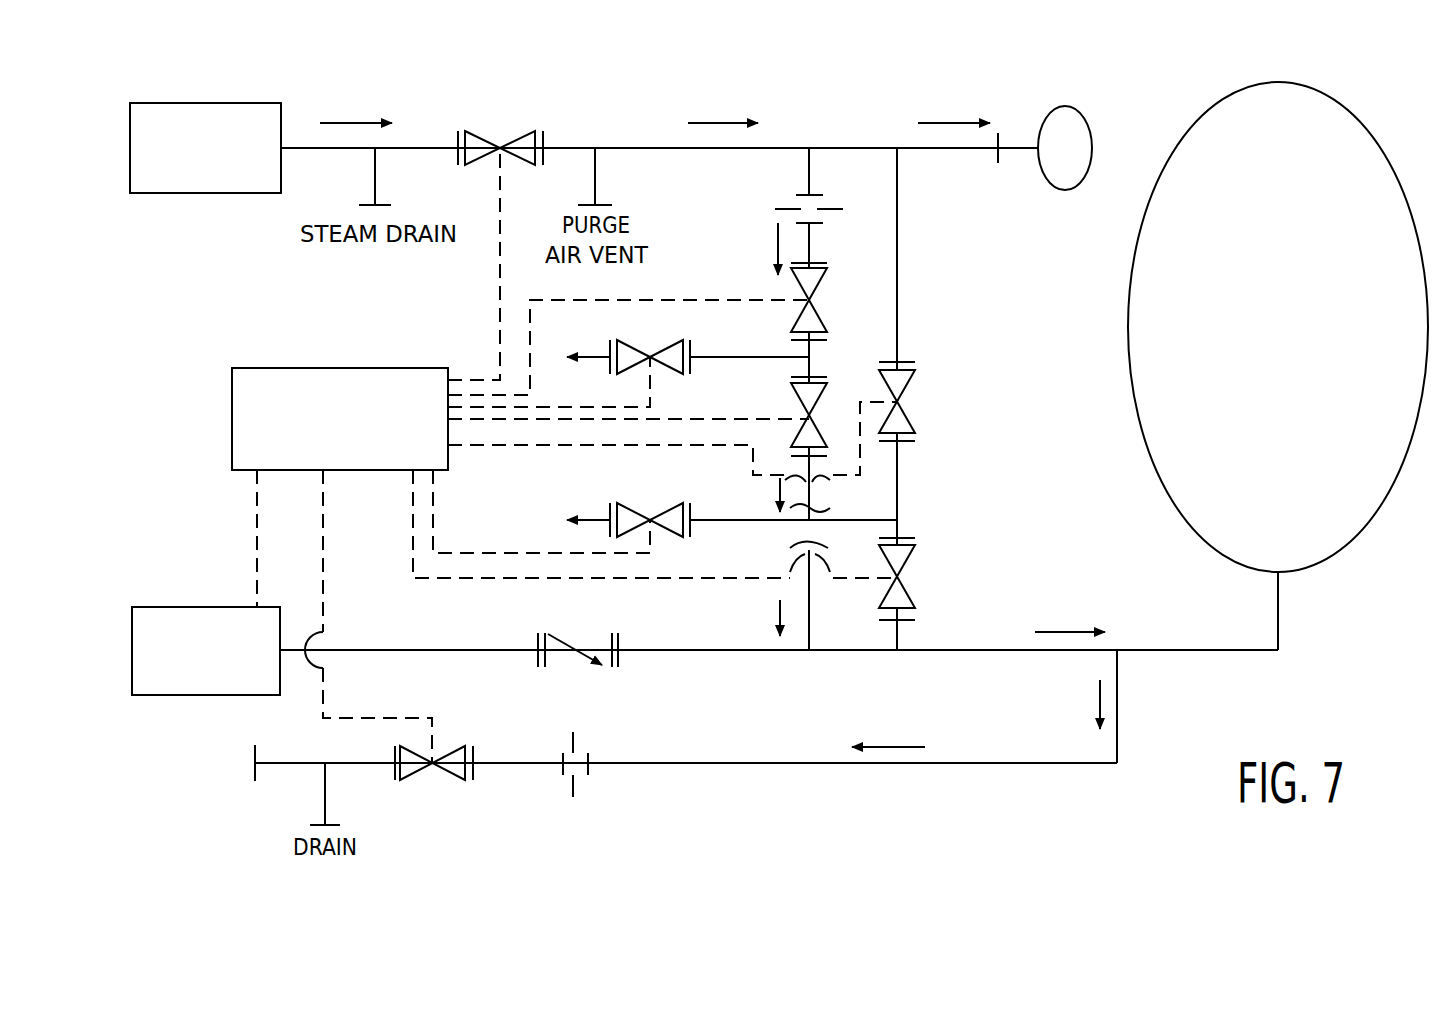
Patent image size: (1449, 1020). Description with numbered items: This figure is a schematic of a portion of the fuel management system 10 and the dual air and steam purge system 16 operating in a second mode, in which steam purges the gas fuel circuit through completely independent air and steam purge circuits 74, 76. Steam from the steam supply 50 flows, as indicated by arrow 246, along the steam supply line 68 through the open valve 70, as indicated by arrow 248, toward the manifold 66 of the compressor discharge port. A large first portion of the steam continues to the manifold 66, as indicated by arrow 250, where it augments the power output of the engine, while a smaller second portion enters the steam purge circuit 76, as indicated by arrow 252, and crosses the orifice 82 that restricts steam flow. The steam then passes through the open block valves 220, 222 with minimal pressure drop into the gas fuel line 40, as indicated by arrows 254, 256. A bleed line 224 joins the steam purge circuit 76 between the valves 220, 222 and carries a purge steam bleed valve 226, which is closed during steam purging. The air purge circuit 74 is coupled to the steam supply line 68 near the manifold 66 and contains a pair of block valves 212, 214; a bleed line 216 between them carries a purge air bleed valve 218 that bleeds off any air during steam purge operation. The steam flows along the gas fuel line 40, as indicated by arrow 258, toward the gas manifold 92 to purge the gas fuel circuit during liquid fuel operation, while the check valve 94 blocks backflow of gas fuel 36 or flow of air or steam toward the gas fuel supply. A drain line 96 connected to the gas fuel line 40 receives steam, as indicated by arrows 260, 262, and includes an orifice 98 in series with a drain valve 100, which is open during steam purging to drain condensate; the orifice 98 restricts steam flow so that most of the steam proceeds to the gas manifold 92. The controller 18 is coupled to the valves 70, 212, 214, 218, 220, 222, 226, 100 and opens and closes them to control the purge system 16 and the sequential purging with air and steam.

The fuel management system 10 is at (166, 576).
The dual air and steam purge system 16 is at (975, 333).
The controller 18 is at (335, 368).
The gas fuel 36 is at (196, 606).
The gas fuel line 40 is at (757, 652).
The steam supply 50 is at (207, 103).
The manifold 66 is at (1068, 190).
The steam supply line 68 is at (620, 148).
The valve 70 is at (500, 131).
The air purge circuit 74 is at (895, 312).
The steam purge circuit 76 is at (807, 174).
The orifice 82 is at (828, 212).
The gas manifold 92 is at (1178, 145).
The valve 94 is at (575, 655).
The drain line 96 is at (790, 765).
The orifice 98 is at (577, 790).
The valve 100 is at (435, 766).
The valve 212 is at (900, 402).
The valve 214 is at (900, 578).
The line 216 is at (828, 522).
The valve 218 is at (655, 523).
The valve 220 is at (812, 302).
The valve 222 is at (812, 412).
The line 224 is at (757, 355).
The valve 226 is at (655, 360).
The arrow 246 is at (350, 121).
The arrow 248 is at (722, 121).
The arrow 250 is at (950, 121).
The arrow 252 is at (776, 243).
The arrow 254 is at (777, 493).
The arrow 256 is at (777, 609).
The arrow 258 is at (1066, 630).
The arrow 260 is at (1098, 705).
The arrow 262 is at (896, 745).